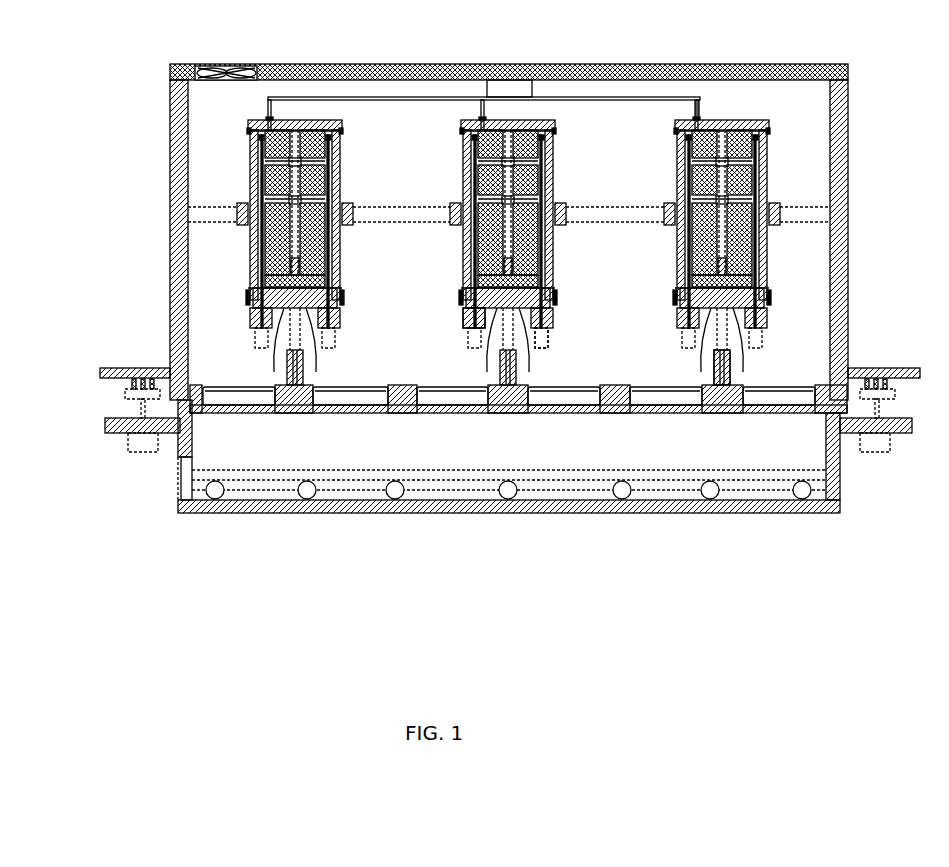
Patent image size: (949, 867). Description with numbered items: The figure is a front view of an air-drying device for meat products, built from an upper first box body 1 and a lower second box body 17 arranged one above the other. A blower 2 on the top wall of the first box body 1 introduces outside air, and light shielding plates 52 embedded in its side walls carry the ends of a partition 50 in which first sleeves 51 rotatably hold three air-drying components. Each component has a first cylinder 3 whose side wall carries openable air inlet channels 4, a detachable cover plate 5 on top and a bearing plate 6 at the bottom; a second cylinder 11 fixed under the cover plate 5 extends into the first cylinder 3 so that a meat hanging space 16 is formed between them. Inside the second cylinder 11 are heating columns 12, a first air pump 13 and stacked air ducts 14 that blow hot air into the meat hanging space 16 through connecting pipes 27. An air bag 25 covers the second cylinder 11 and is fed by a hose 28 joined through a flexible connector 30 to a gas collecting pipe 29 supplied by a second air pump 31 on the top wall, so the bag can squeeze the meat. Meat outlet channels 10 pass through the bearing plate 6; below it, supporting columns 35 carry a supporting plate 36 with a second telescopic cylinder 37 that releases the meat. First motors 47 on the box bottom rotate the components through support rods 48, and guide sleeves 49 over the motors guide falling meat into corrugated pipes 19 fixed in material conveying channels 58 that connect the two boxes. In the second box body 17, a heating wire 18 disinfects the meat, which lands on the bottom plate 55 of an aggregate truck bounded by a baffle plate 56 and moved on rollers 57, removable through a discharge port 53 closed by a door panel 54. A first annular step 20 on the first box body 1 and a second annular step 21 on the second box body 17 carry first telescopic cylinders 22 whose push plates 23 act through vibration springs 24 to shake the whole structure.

The first box body 1 is at (185, 92).
The blower 2 is at (232, 65).
The first cylinder 3 is at (228, 231).
The air inlet channel 4 is at (233, 215).
The cover plate 5 is at (234, 119).
The bearing plate 6 is at (785, 308).
The meat outlet channel 10 is at (232, 299).
The second cylinder 11 is at (223, 208).
The heating column 12 is at (809, 206).
The first air pump 13 is at (211, 208).
The air duct 14 is at (298, 81).
The meat hanging space 16 is at (237, 209).
The second box body 17 is at (237, 512).
The heating wire 18 is at (843, 473).
The corrugated pipe 19 is at (353, 392).
The first annular step 20 is at (168, 369).
The second annular step 21 is at (175, 432).
The first telescopic cylinder 22 is at (143, 445).
The push plate 23 is at (880, 395).
The vibration spring 24 is at (890, 383).
The air bag 25 is at (790, 212).
The connecting pipe 27 is at (797, 208).
The hose 28 is at (798, 107).
The gas collecting pipe 29 is at (572, 97).
The flexible connector 30 is at (703, 98).
The second air pump 31 is at (518, 92).
The supporting column 35 is at (443, 431).
The supporting plate 36 is at (502, 431).
The second telescopic cylinder 37 is at (558, 441).
The first motor 47 is at (738, 452).
The support rod 48 is at (508, 431).
The guide sleeve 49 is at (754, 431).
The partition 50 is at (376, 212).
The first sleeve 51 is at (494, 129).
The light shielding plate 52 is at (847, 233).
The discharge port 53 is at (188, 497).
The door panel 54 is at (178, 495).
The bottom plate 55 is at (595, 482).
The baffle plate 56 is at (638, 473).
The roller 57 is at (710, 490).
The material conveying channel 58 is at (868, 369).